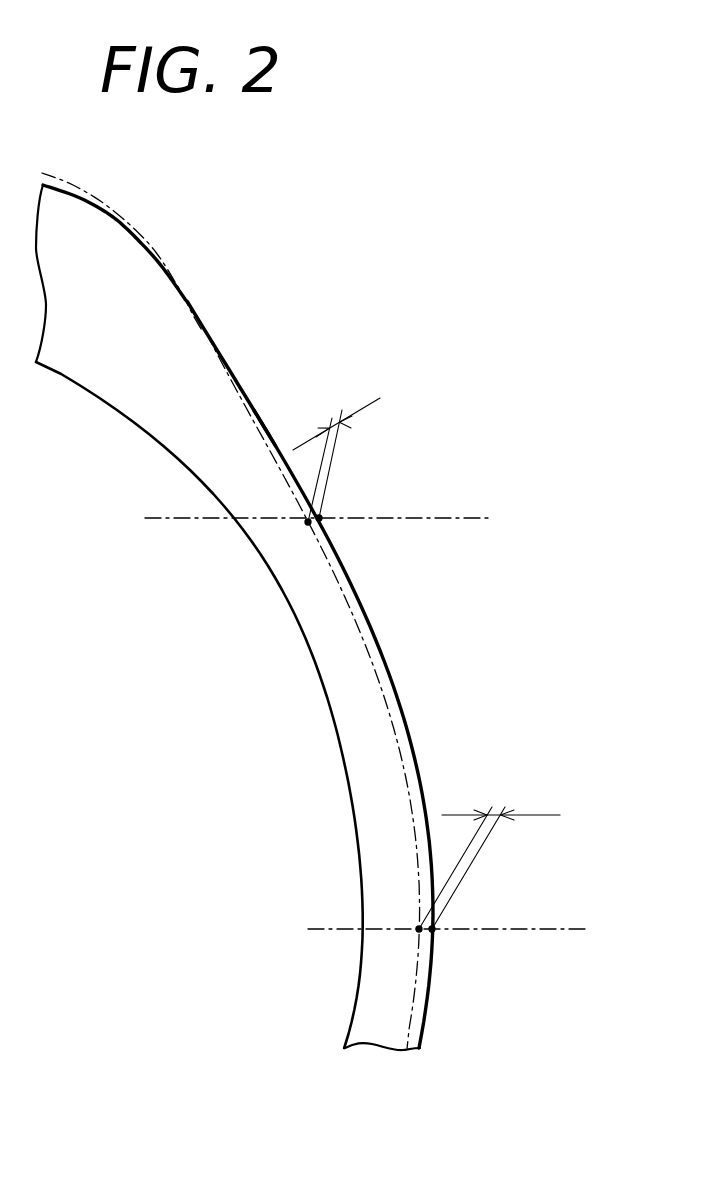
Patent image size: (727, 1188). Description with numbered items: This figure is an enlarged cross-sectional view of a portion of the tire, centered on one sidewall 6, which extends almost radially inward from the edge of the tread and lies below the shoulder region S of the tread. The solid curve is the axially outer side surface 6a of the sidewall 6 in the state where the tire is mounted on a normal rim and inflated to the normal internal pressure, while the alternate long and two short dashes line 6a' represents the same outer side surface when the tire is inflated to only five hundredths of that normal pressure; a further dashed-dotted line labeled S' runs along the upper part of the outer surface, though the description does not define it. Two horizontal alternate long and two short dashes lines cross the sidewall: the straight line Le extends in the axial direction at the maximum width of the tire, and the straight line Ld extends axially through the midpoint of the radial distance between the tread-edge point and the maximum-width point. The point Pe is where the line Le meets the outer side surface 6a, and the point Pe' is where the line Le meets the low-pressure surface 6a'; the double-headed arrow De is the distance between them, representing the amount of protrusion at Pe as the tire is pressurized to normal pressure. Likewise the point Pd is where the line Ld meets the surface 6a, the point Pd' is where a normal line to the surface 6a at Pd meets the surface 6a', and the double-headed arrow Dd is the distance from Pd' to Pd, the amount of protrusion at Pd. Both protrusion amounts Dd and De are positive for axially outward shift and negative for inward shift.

The sidewall 6 is at (434, 710).
The axially outer side surface 6a is at (269, 616).
The outer side surface 6a' is at (370, 690).
The shoulder region S is at (280, 392).
The original tooth profile curve S' is at (131, 252).
The straight line Ld is at (462, 520).
The straight line Le is at (557, 930).
The point Pd is at (366, 544).
The point Pd' is at (249, 542).
The amount of protrusion Dd is at (336, 452).
The point Pe is at (493, 909).
The point Pe' is at (457, 956).
The amount of protrusion De is at (489, 853).